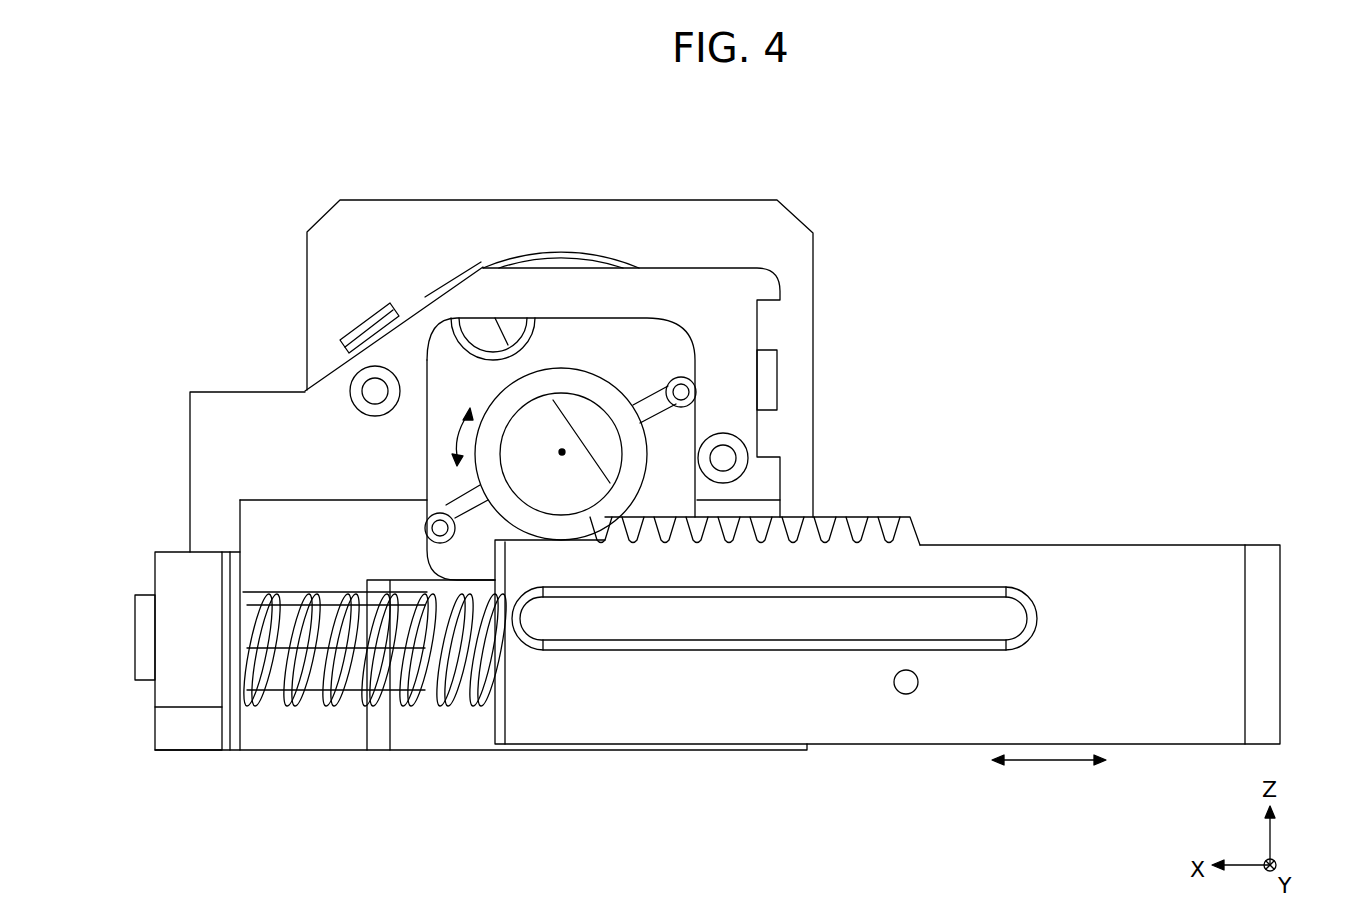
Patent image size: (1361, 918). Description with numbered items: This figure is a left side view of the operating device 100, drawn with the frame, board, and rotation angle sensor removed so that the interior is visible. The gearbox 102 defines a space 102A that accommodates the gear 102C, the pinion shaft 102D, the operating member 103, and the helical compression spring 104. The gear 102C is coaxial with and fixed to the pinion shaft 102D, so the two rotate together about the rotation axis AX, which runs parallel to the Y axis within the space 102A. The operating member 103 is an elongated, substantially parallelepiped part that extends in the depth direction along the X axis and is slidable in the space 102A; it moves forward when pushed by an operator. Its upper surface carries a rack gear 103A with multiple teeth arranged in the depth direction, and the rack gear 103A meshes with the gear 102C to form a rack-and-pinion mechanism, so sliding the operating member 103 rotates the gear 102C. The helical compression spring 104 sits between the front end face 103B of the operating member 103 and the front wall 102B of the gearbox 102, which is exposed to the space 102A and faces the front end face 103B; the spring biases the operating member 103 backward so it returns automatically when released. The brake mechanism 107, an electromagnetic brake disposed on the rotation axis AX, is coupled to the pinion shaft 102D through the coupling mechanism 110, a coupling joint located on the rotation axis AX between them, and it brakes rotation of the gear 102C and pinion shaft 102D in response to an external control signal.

The operating device 100 is at (1310, 104).
The gearbox 102 is at (767, 270).
The space 102A is at (297, 520).
The front wall 102B is at (253, 750).
The gear 102C is at (597, 443).
The pinion shaft 102D is at (530, 437).
The operating member 103 is at (1281, 544).
The rack gear 103A is at (879, 508).
The front end face 103B is at (495, 745).
The helical compression spring 104 is at (322, 707).
The brake mechanism 107 is at (330, 213).
The coupling mechanism 110 is at (562, 252).
The rotation axis AX is at (562, 452).